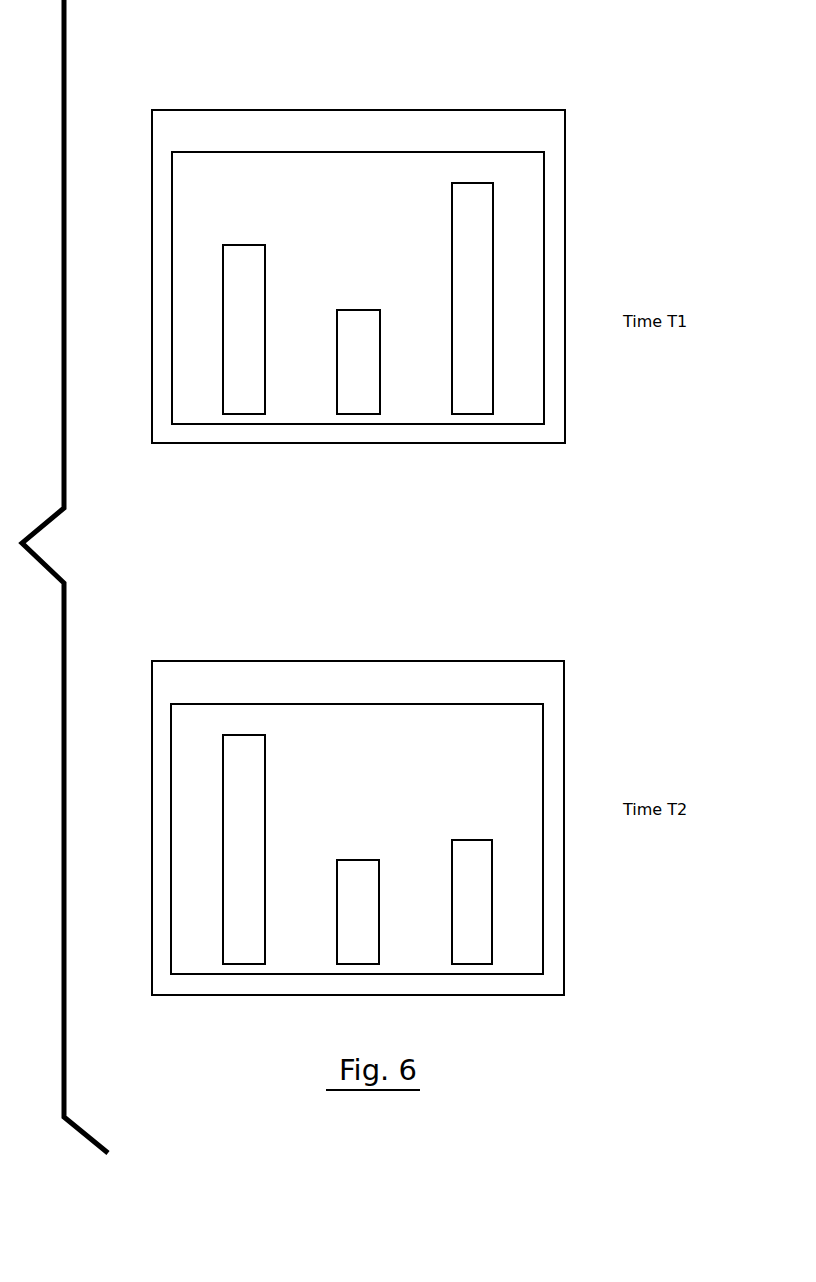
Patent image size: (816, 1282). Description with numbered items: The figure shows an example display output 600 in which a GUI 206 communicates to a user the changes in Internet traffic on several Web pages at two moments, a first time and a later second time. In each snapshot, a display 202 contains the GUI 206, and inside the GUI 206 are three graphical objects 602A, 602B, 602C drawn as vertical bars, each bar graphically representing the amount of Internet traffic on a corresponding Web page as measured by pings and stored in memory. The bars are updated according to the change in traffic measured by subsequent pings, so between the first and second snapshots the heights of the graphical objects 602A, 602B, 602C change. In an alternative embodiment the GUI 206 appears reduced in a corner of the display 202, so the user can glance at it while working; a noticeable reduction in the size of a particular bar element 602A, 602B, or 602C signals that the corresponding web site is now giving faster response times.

The display output of bar chart over time 600 is at (271, 90).
The display 202 is at (482, 109).
The GUI 206 is at (442, 152).
The graphical object 602A is at (236, 245).
The graphical object 602B is at (379, 315).
The graphical object 602C is at (473, 183).